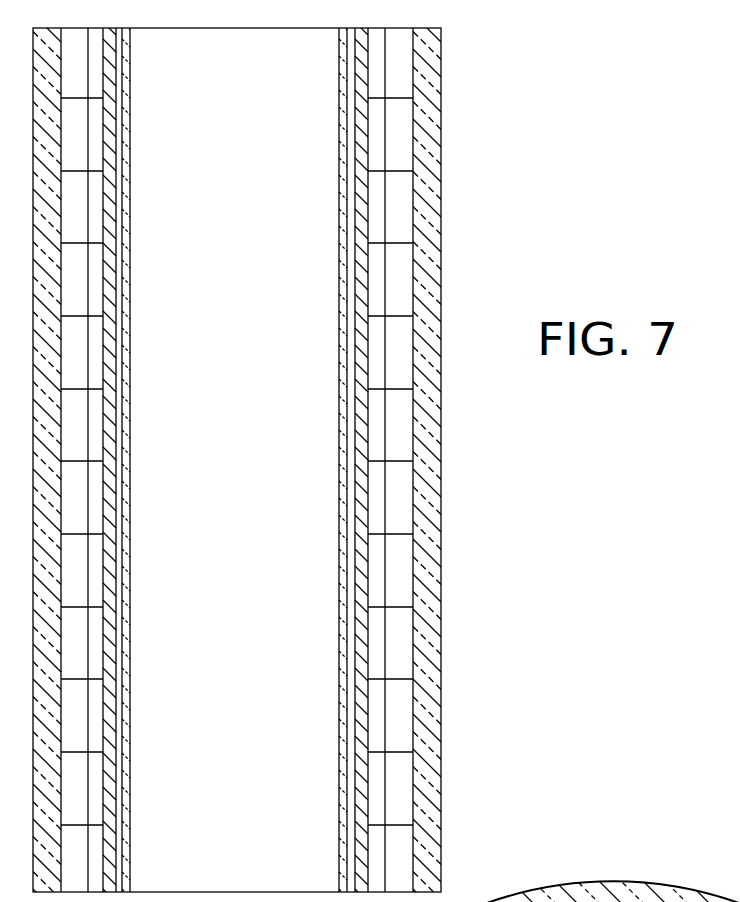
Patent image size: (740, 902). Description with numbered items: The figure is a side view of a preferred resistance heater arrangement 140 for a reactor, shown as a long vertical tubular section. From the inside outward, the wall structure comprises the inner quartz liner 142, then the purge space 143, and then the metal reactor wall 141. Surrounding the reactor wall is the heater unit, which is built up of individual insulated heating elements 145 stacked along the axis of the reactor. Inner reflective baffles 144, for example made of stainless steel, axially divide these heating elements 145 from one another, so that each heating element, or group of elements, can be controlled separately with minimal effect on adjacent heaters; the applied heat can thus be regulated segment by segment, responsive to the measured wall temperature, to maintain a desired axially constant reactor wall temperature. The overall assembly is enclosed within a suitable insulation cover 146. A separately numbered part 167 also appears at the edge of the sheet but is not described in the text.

The arrangement 140 is at (447, 498).
The metal reactor wall 141 is at (367, 220).
The inner quartz liner 142 is at (130, 225).
The purge space 143 is at (122, 88).
The inner reflective baffles 144 is at (370, 317).
The insulated heating elements 145 is at (403, 423).
The insulation cover 146 is at (435, 547).
The cylindrical body 167 is at (607, 901).